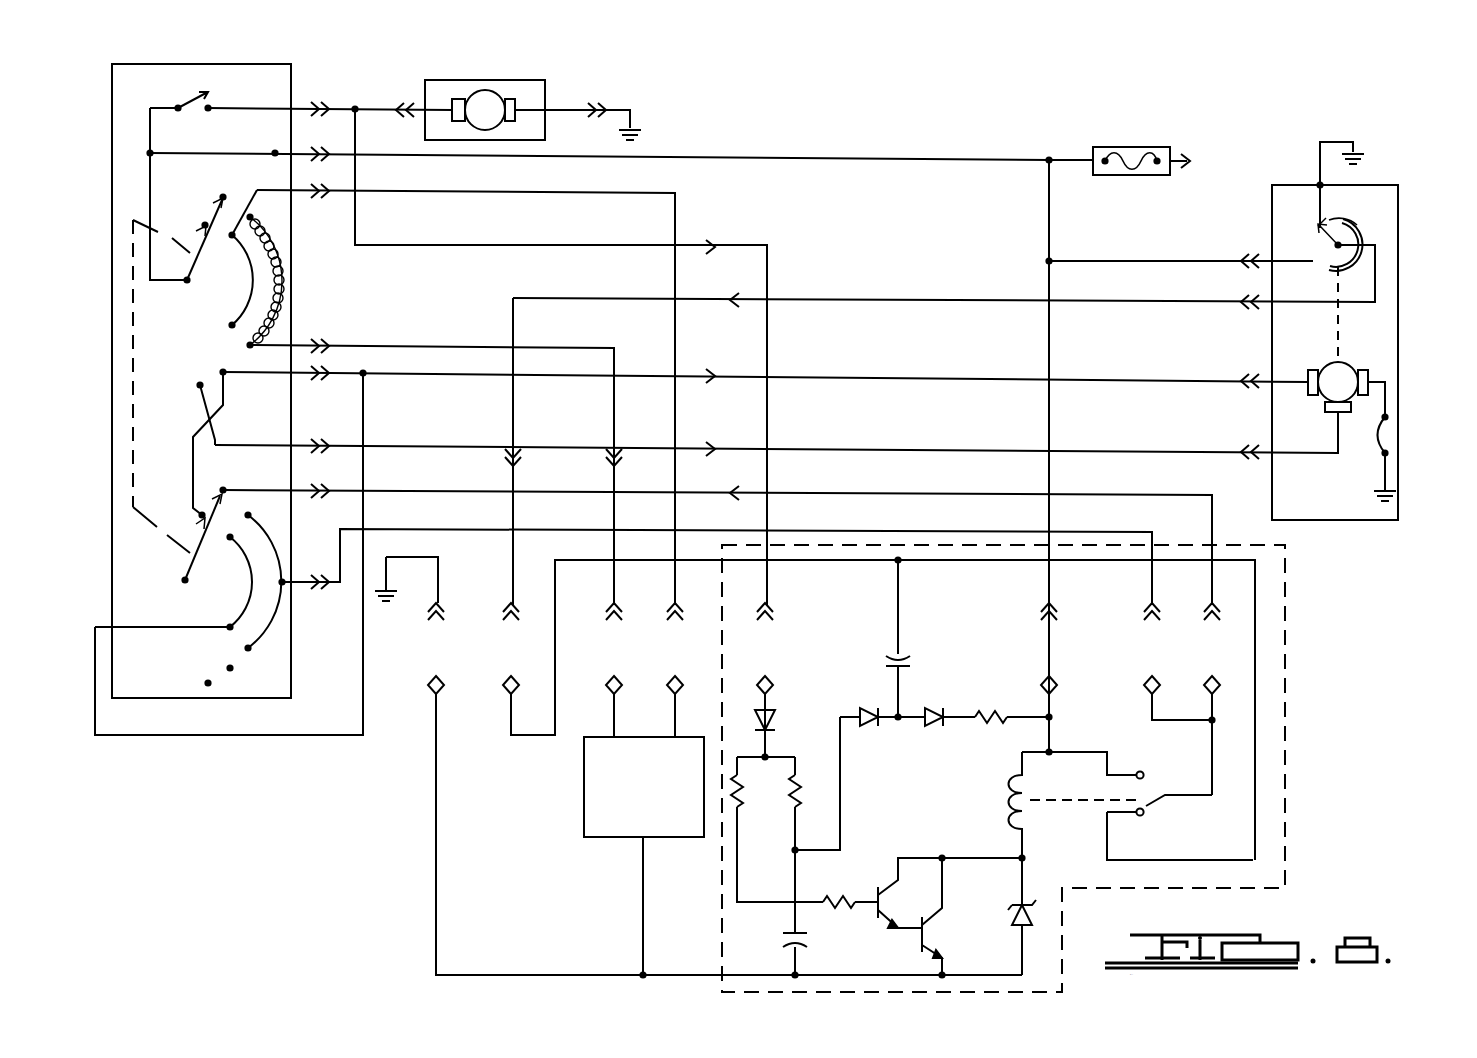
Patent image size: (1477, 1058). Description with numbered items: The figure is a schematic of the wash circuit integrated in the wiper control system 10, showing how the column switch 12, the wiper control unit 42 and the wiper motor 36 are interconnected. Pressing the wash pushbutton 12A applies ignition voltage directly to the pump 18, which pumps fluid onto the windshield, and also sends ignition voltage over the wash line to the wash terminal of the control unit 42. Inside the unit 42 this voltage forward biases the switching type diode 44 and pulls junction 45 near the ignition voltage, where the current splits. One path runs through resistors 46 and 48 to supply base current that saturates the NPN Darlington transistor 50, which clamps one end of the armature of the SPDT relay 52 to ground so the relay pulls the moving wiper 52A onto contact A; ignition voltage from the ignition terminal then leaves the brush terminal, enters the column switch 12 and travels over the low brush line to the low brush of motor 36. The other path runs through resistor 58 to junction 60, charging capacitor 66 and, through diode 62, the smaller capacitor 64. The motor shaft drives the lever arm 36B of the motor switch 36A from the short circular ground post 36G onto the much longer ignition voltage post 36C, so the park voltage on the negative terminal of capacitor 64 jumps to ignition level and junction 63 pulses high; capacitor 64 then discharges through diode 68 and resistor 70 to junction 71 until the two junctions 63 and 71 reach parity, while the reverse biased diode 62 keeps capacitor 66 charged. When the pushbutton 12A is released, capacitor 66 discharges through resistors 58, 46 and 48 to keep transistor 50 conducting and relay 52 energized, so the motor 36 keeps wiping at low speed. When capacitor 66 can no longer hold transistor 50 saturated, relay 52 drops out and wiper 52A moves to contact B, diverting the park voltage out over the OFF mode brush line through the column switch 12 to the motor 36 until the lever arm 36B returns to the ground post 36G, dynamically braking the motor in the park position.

The windshield wiper control system 10 is at (774, 528).
The column switch 12 is at (229, 399).
The wash pushbutton 12A is at (199, 115).
The pump 18 is at (510, 118).
The wiper motor 36 is at (1325, 340).
The motor switch 36A is at (1358, 232).
The lever arm 36B is at (1357, 222).
The motor switch ignition voltage post 36C is at (1360, 228).
The circular ground post 36G is at (1318, 226).
The wiper control unit 42 is at (1290, 620).
The switching type diode 44 is at (775, 718).
The junction 45 is at (770, 756).
The resistor 46 is at (740, 810).
The resistor 48 is at (840, 908).
The NPN Darlington transistor 50 is at (922, 858).
The SPDT relay 52 is at (1015, 815).
The moving wiper 52A is at (1155, 800).
The resistor 58 is at (800, 800).
The junction 60 is at (790, 854).
The diode 62 is at (868, 722).
The junction 63 is at (900, 722).
The capacitor 64 is at (912, 662).
The capacitor 66 is at (783, 942).
The diode 68 is at (938, 712).
The resistor 70 is at (986, 722).
The junction 71 is at (1052, 717).